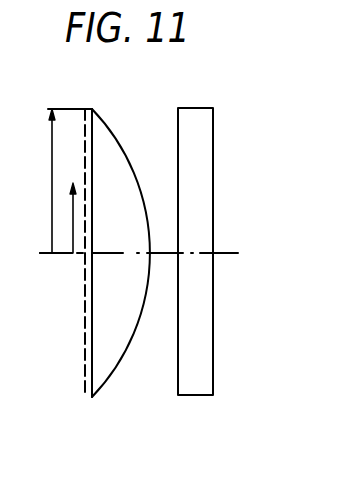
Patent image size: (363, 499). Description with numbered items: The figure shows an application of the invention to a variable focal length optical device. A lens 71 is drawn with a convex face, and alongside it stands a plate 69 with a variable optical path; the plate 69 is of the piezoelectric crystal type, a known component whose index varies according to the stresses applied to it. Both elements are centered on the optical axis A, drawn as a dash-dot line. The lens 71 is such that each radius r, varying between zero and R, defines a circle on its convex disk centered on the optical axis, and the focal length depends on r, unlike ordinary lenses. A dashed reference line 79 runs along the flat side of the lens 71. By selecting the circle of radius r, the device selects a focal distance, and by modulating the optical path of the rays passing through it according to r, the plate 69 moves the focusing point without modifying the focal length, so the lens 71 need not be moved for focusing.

The plate 69 is at (193, 393).
The lens 71 is at (116, 381).
The reference plane (dashed line) 79 is at (89, 373).
The maximum radius R is at (52, 184).
The radius r is at (74, 236).
The optical axis A is at (44, 252).